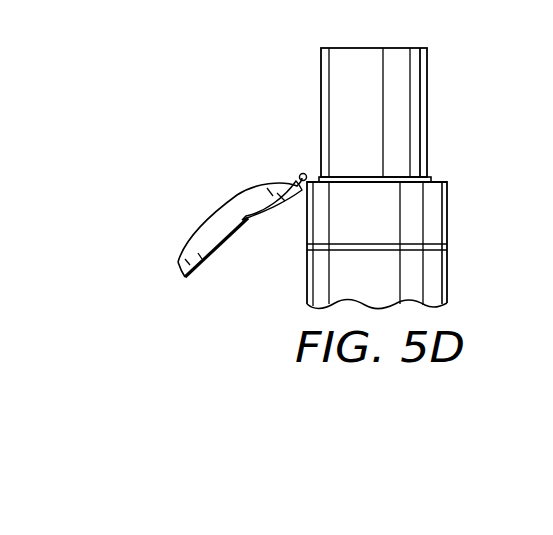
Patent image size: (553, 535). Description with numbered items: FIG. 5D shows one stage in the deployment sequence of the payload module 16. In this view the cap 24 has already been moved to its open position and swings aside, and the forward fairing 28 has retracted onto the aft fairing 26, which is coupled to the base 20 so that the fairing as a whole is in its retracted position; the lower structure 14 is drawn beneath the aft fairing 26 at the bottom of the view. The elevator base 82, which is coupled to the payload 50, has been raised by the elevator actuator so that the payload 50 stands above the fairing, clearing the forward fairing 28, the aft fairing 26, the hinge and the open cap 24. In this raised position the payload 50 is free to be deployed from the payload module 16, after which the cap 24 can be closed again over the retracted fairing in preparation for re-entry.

The container 14 is at (443, 283).
The payload module 16 is at (290, 52).
The base 20 is at (306, 246).
The cap 24 is at (231, 195).
The aft fairing 26 is at (448, 213).
The forward fairing 28 is at (377, 243).
The payload 50 is at (428, 112).
The elevator base 82 is at (415, 177).